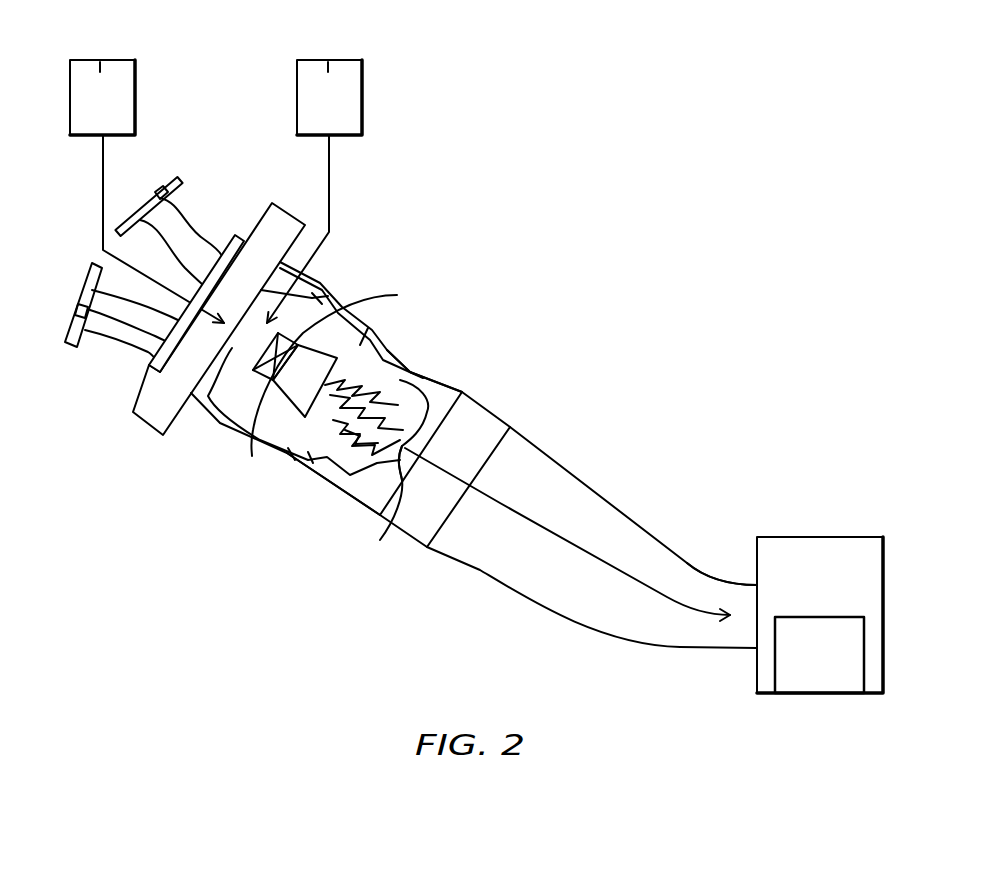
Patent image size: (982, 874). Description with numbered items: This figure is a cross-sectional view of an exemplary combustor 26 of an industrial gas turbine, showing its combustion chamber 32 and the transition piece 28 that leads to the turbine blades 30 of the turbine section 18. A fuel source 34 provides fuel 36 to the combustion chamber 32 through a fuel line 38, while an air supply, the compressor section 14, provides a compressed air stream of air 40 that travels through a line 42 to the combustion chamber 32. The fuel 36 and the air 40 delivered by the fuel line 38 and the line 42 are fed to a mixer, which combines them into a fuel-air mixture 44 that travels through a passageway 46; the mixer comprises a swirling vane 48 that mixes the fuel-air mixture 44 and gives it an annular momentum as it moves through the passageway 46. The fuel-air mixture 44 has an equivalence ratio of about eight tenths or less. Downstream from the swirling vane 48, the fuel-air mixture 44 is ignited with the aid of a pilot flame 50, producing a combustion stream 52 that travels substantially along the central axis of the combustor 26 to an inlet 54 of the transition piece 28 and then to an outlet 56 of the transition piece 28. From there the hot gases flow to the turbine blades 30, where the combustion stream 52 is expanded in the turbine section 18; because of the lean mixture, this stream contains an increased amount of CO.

The compressor section 14 is at (135, 97).
The air 40 is at (100, 72).
The line 42 is at (103, 165).
The fuel source 34 is at (362, 97).
The fuel 36 is at (328, 72).
The fuel line 38 is at (330, 183).
The combustor 26 is at (318, 275).
The passageway 46 is at (252, 455).
The swirling vane 48 is at (396, 295).
The fuel-air mixture 44 is at (308, 450).
The combustion chamber 32 is at (365, 485).
The combustion stream 52 is at (400, 470).
The pilot flame 50 is at (390, 402).
The inlet 54 is at (480, 457).
The transition piece 28 is at (487, 593).
The outlet 56 is at (757, 613).
The turbine section 18 is at (808, 537).
The turbine blades 30 is at (775, 665).